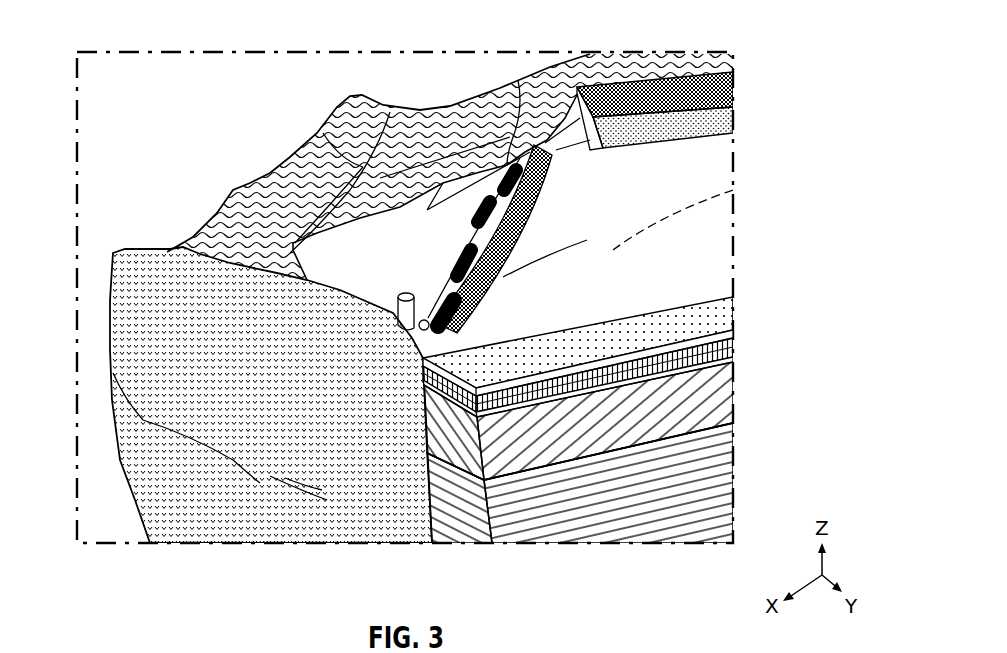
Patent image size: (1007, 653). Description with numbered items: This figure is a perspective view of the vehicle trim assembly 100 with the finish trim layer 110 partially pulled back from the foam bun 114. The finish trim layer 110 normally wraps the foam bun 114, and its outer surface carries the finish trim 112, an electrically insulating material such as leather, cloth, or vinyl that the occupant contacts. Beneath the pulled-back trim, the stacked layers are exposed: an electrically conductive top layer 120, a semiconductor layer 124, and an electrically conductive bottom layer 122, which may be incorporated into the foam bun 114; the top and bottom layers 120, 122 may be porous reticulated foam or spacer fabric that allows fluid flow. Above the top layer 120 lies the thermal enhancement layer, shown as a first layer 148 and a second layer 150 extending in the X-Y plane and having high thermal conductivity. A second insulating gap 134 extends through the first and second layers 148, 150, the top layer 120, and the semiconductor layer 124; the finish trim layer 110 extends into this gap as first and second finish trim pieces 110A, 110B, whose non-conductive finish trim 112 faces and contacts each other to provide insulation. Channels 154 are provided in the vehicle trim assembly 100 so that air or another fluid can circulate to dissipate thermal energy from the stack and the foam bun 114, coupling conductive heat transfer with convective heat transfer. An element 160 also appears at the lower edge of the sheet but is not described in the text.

The vehicle trim assembly 100 is at (122, 32).
The finish trim layer 110 is at (733, 107).
The first finish trim piece 110A is at (505, 145).
The second finish trim piece 110B is at (598, 97).
The finish trim 112 is at (665, 62).
The foam bun 114 is at (327, 513).
The top layer 120 is at (687, 377).
The bottom layer 122 is at (722, 485).
The semiconductor layer 124 is at (685, 418).
The second insulating gap 134 is at (465, 528).
The first layer 148 is at (733, 330).
The second layer 150 is at (733, 357).
The channels 154 is at (715, 241).
The electronics module 160 is at (650, 650).